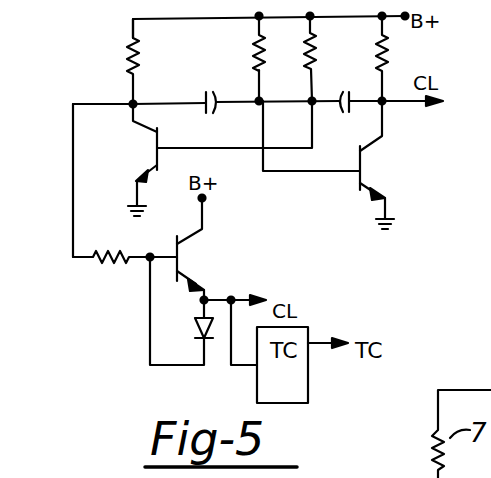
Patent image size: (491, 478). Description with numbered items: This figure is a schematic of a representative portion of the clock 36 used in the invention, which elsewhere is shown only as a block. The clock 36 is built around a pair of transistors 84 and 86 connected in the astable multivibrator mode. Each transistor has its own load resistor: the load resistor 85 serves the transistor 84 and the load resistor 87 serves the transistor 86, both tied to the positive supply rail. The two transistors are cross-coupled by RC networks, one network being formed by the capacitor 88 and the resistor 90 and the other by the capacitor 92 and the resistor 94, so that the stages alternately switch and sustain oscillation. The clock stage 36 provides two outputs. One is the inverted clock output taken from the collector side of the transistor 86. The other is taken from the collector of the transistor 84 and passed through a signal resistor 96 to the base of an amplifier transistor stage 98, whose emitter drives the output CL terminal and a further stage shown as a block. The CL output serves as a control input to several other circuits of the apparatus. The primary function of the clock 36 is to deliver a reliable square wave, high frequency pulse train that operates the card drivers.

The clock 36 is at (334, 262).
The transistor 84 is at (157, 146).
The load resistor 85 is at (128, 50).
The transistor 86 is at (362, 160).
The load resistor 87 is at (386, 52).
The cross-coupling RC network capacitor 88 is at (205, 92).
The cross-coupling RC network resistor 90 is at (256, 46).
The cross-coupling RC network capacitor 92 is at (349, 93).
The cross-coupling RC network resistor 94 is at (306, 49).
The signal resistor 96 is at (112, 263).
The amplifier transistor stage 98 is at (186, 274).